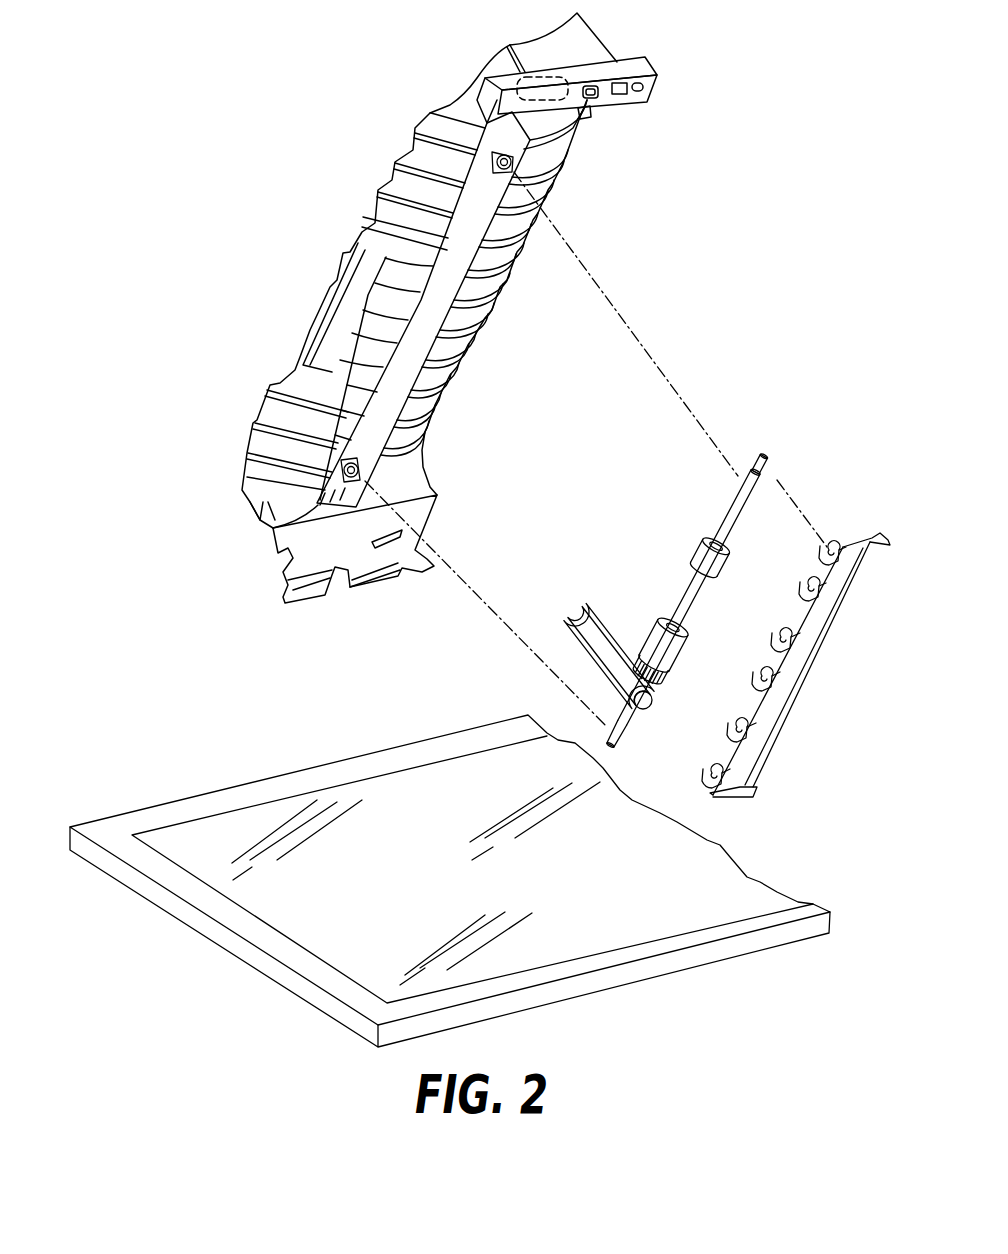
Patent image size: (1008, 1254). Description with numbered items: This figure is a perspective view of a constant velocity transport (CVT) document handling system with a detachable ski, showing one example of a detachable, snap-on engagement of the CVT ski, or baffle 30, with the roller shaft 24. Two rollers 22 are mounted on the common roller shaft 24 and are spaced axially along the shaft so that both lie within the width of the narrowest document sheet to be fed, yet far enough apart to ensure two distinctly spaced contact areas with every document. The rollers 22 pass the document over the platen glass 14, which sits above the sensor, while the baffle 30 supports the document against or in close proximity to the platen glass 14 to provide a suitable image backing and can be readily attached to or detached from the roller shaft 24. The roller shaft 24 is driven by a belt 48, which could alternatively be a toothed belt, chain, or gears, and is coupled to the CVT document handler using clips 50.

The platen glass 14 is at (470, 787).
The roller 22 is at (660, 622).
The roller shaft 24 is at (762, 478).
The baffle 30 is at (787, 682).
The belt 48 is at (562, 608).
The clips 50 is at (513, 165).